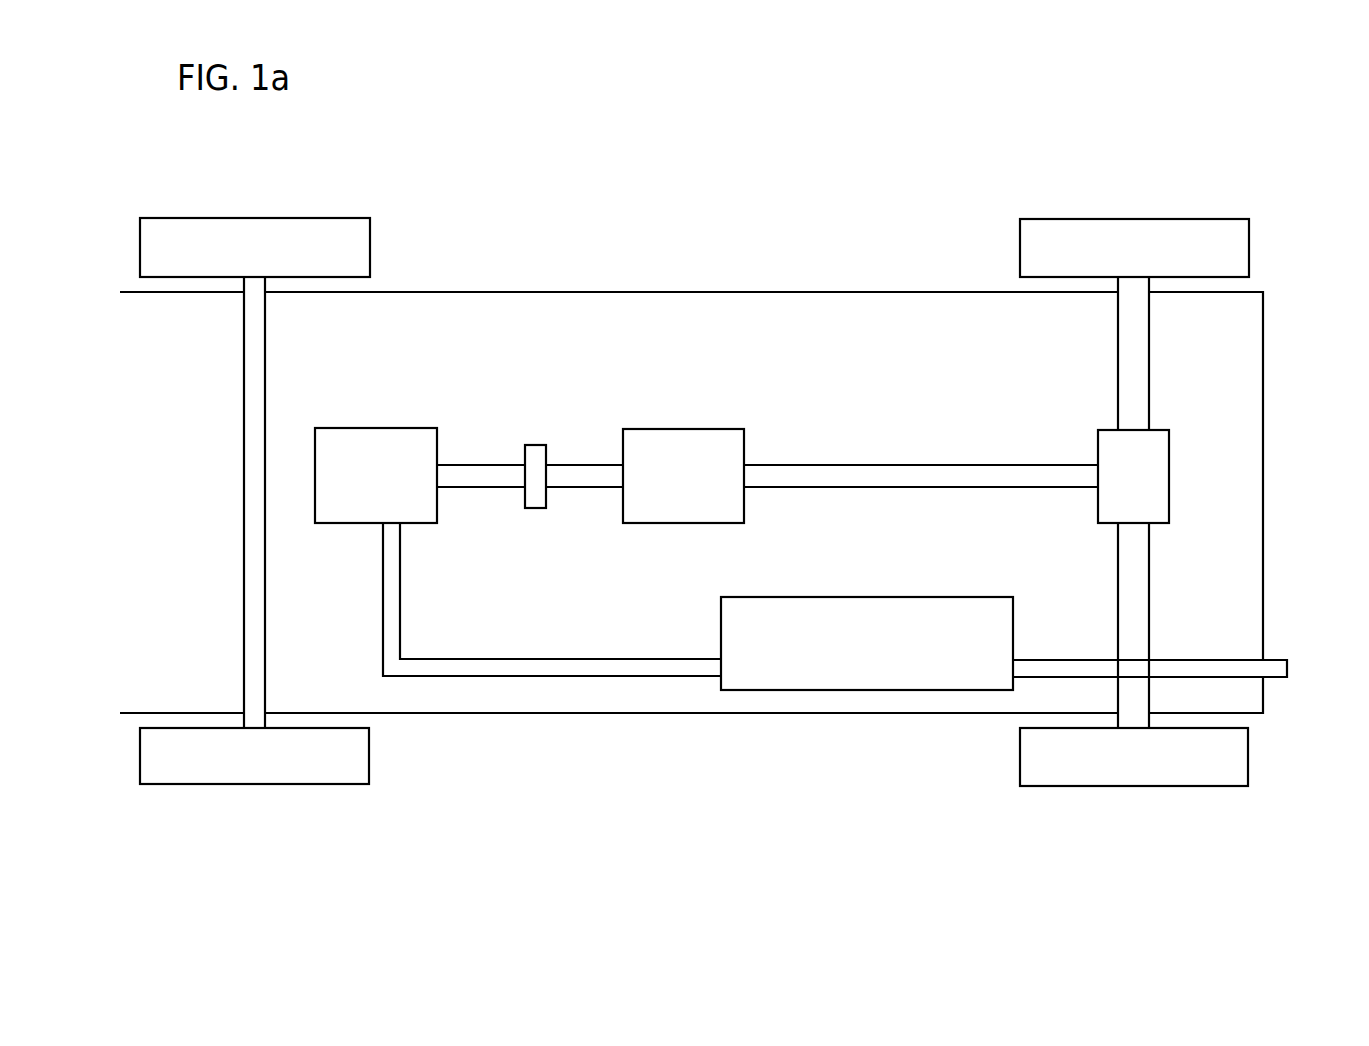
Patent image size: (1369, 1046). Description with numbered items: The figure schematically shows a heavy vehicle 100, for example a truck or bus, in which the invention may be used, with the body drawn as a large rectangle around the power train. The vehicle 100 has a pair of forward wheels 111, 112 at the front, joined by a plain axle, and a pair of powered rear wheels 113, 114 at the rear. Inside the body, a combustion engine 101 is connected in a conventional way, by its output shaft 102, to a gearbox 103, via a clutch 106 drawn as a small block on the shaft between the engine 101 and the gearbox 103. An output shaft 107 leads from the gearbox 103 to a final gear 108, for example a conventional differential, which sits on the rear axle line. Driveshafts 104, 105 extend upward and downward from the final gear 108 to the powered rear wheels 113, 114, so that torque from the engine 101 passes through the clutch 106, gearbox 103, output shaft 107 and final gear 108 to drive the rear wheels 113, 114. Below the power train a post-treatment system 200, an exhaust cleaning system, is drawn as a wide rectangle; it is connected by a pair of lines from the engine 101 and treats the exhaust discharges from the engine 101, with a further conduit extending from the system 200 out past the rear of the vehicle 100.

The heavy vehicle 100 is at (594, 124).
The combustion engine 101 is at (350, 512).
The output shaft 102 is at (463, 472).
The gearbox 103 is at (686, 440).
The driveshaft 104 is at (1138, 352).
The driveshaft 105 is at (1143, 637).
The clutch 106 is at (530, 495).
The output shaft 107 is at (1015, 480).
The final gear 108 is at (1163, 472).
The forward wheel 111 is at (358, 250).
The forward wheel 112 is at (362, 762).
The powered rear wheel 113 is at (1243, 242).
The powered rear wheel 114 is at (1243, 760).
The post-treatment system 200 is at (885, 685).